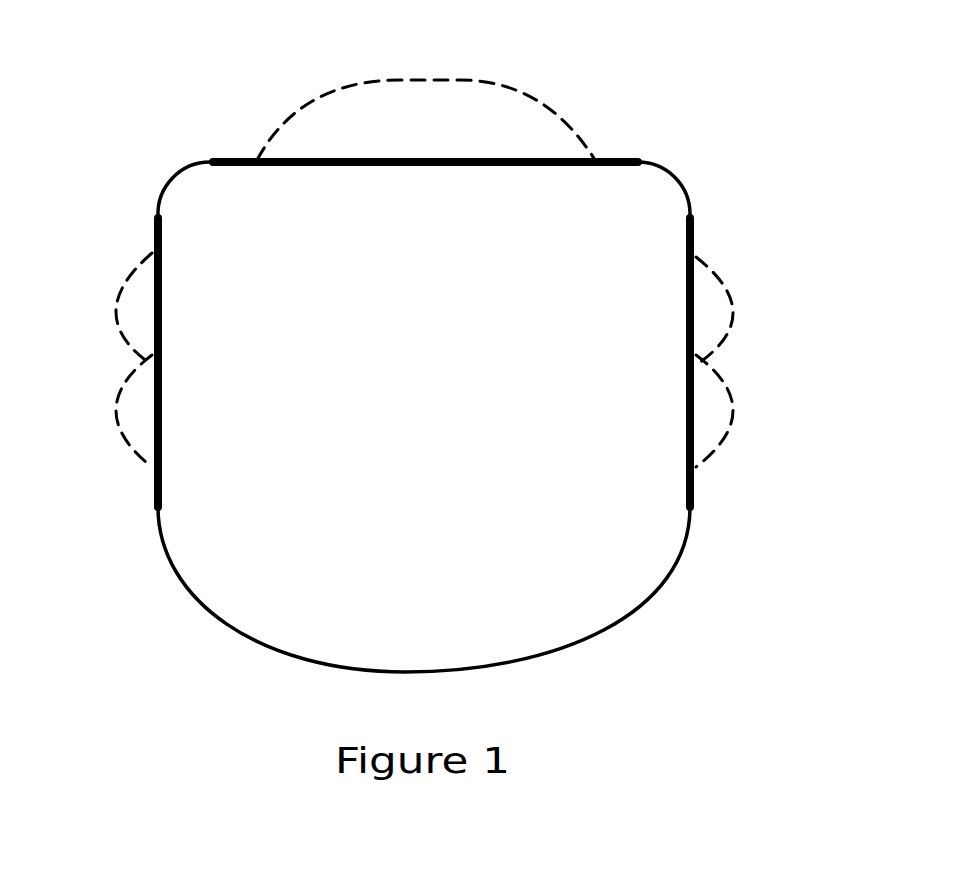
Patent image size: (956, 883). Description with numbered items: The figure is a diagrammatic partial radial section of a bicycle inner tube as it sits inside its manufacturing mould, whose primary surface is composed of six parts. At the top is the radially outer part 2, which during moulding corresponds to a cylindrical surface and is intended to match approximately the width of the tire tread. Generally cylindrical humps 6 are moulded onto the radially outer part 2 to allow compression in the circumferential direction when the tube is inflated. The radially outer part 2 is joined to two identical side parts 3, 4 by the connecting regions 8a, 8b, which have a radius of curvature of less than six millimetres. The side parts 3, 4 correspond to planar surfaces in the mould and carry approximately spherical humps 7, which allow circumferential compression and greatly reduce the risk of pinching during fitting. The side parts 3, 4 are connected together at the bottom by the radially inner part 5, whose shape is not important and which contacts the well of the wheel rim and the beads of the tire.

The radially outer part 2 is at (382, 163).
The side part 3 is at (688, 437).
The side part 4 is at (160, 408).
The radially inner part 5 is at (567, 643).
The humps 6 is at (532, 97).
The humps 7 is at (118, 287).
The connecting region 8a is at (178, 162).
The connecting region 8b is at (678, 175).